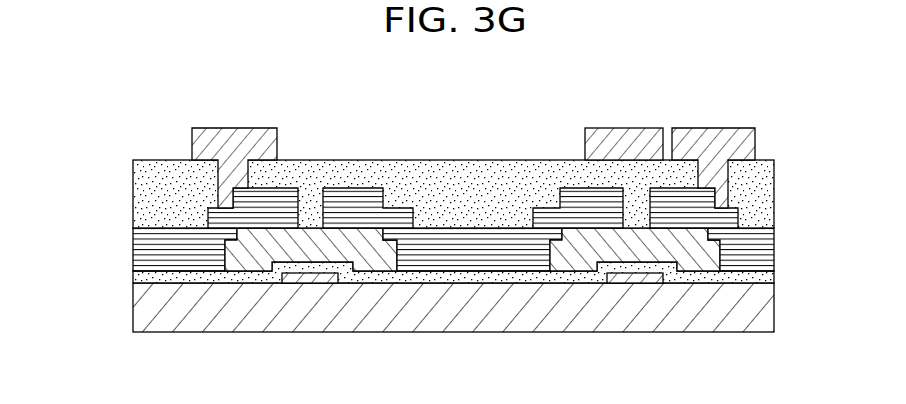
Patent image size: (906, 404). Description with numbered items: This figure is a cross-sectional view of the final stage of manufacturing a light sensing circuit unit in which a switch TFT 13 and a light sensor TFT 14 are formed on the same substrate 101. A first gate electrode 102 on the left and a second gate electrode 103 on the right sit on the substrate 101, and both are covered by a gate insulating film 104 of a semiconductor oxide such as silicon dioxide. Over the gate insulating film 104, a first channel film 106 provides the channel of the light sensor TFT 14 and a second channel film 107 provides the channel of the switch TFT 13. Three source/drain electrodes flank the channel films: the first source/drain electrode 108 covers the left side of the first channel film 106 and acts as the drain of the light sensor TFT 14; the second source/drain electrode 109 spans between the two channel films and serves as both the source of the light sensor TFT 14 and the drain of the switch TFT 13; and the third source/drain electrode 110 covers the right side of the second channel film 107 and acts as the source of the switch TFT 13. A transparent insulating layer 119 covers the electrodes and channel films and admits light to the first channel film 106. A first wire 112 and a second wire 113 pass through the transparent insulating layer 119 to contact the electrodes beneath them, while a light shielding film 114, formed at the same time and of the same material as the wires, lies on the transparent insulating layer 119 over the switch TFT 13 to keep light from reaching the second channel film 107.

The switch TFT 13 is at (579, 158).
The light sensor TFT 14 is at (292, 155).
The substrate 101 is at (774, 309).
The first gate electrode 102 is at (308, 278).
The second gate electrode 103 is at (633, 277).
The gate insulating film 104 is at (774, 280).
The first channel film 106 is at (244, 268).
The second channel film 107 is at (698, 267).
The first source/drain electrode 108 is at (133, 248).
The second source/drain electrode 109 is at (474, 265).
The third source/drain electrode 110 is at (774, 248).
The first wire 112 is at (233, 128).
The second wire 113 is at (713, 128).
The light shielding film 114 is at (622, 128).
The transparent insulating layer 119 is at (472, 160).